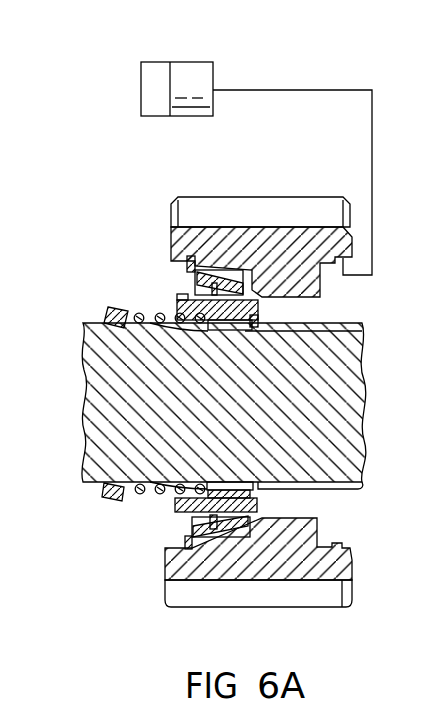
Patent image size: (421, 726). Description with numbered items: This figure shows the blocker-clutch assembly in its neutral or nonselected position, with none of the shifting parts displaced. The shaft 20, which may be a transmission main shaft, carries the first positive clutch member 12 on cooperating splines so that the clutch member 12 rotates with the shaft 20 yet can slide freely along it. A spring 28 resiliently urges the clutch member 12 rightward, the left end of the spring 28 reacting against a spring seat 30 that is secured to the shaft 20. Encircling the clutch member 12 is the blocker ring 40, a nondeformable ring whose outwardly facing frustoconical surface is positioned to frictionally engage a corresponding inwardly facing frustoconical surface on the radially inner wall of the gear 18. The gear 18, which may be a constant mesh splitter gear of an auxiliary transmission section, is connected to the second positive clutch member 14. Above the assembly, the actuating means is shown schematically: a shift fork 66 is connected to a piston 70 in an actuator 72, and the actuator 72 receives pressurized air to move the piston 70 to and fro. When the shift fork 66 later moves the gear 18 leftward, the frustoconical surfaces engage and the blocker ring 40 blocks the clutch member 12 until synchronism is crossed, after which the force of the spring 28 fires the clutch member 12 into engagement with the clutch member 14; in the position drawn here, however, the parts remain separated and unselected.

The actuator 72 is at (167, 62).
The piston 70 is at (196, 105).
The shift fork 66 is at (370, 167).
The gear 18 is at (237, 210).
The blocker ring 40 is at (190, 274).
The first positive clutch member 12 is at (153, 294).
The spring seat 30 is at (112, 323).
The shaft 20 is at (327, 340).
The spring 28 is at (135, 492).
The second positive clutch member 14 is at (326, 522).